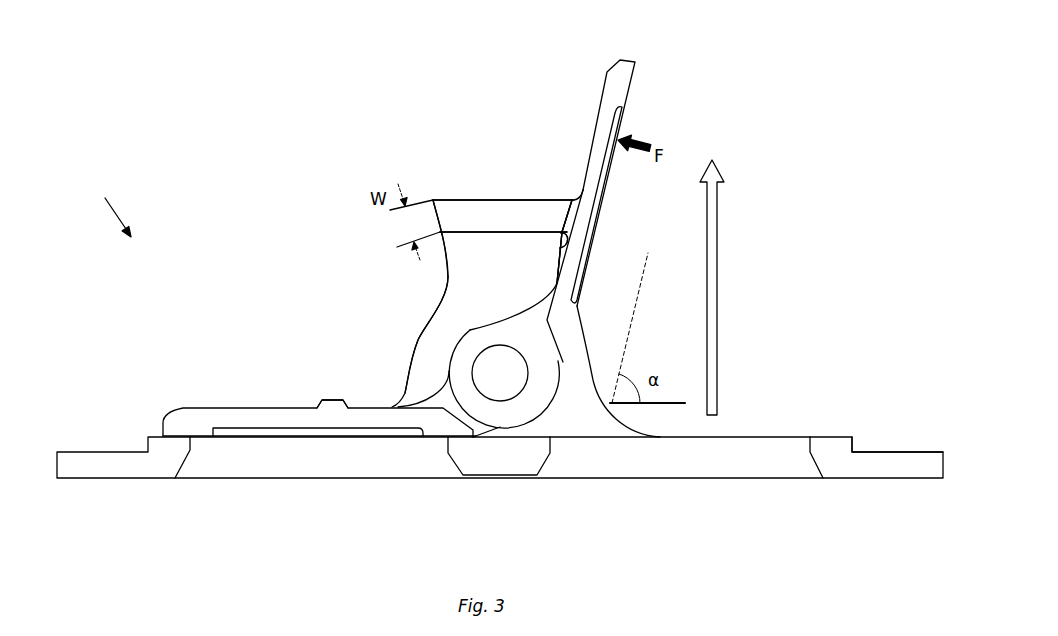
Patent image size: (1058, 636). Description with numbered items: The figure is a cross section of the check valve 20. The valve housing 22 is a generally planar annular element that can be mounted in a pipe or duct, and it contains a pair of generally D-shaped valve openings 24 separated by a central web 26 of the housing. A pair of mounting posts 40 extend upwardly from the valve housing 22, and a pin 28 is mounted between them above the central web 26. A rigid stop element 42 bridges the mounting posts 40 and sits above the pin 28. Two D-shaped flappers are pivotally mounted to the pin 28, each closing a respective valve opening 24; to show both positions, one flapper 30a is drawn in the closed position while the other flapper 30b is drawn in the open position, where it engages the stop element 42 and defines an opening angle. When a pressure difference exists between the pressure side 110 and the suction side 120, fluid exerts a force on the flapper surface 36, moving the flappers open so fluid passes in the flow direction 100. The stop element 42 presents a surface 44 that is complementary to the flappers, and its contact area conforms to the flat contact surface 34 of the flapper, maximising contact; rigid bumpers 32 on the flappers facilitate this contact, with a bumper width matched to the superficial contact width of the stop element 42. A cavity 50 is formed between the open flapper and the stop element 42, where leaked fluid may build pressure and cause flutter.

The check valve 20 is at (108, 207).
The valve housing 22 is at (852, 437).
The valve openings 24 is at (713, 466).
The central web 26 is at (452, 452).
The pin 28 is at (512, 383).
The flapper 30a is at (258, 408).
The flapper 30b is at (605, 84).
The bumpers 32 is at (325, 398).
The contact surface 34 is at (567, 215).
The flapper surface 36 is at (623, 123).
The mounting posts 40 is at (437, 308).
The stop element 42 is at (458, 200).
The surface 44 is at (564, 241).
The cavity 50 is at (512, 283).
The flow direction 100 is at (728, 287).
The pressure side 110 is at (532, 532).
The suction side 120 is at (520, 39).